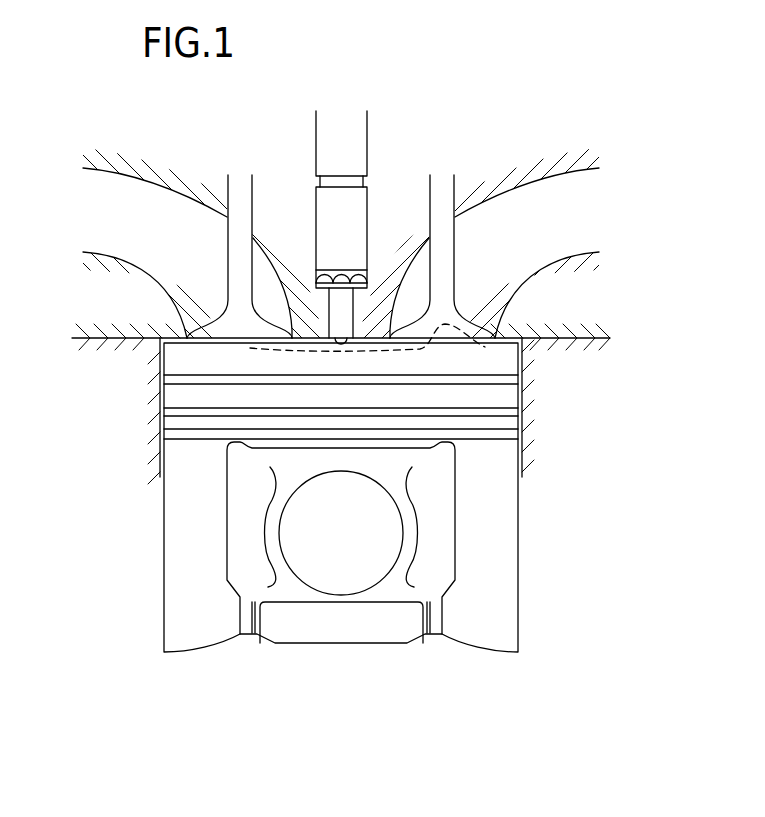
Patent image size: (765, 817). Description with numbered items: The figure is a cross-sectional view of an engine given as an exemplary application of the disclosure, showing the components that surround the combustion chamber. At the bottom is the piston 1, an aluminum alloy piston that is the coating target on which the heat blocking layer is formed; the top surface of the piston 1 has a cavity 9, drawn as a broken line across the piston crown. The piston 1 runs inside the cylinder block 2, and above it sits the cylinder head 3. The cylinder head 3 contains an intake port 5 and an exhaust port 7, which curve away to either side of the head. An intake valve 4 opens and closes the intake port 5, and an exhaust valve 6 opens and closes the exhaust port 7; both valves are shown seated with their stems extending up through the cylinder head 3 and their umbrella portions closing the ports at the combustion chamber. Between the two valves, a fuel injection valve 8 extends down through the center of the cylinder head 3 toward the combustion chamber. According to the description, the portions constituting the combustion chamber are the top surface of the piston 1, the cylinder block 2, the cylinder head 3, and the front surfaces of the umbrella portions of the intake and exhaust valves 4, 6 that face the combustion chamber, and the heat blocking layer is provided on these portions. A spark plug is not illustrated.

The piston 1 is at (520, 567).
The cylinder block 2 is at (567, 331).
The cylinder head 3 is at (122, 330).
The intake valve 4 is at (447, 257).
The intake port 5 is at (488, 282).
The exhaust valve 6 is at (237, 256).
The exhaust port 7 is at (196, 290).
The fuel injection valve 8 is at (358, 133).
The cavity 9 is at (485, 347).